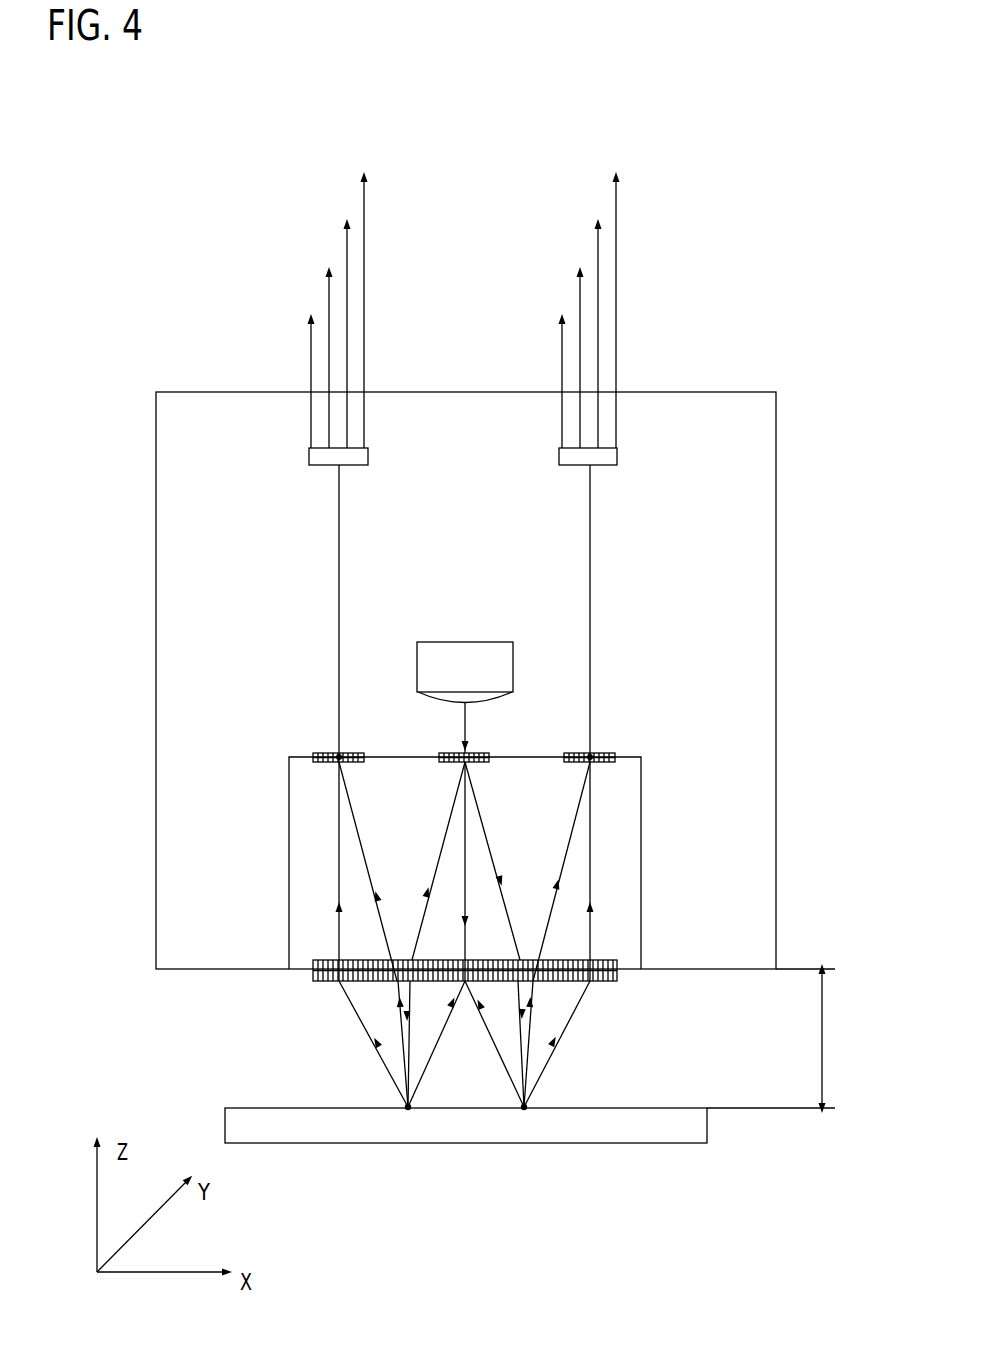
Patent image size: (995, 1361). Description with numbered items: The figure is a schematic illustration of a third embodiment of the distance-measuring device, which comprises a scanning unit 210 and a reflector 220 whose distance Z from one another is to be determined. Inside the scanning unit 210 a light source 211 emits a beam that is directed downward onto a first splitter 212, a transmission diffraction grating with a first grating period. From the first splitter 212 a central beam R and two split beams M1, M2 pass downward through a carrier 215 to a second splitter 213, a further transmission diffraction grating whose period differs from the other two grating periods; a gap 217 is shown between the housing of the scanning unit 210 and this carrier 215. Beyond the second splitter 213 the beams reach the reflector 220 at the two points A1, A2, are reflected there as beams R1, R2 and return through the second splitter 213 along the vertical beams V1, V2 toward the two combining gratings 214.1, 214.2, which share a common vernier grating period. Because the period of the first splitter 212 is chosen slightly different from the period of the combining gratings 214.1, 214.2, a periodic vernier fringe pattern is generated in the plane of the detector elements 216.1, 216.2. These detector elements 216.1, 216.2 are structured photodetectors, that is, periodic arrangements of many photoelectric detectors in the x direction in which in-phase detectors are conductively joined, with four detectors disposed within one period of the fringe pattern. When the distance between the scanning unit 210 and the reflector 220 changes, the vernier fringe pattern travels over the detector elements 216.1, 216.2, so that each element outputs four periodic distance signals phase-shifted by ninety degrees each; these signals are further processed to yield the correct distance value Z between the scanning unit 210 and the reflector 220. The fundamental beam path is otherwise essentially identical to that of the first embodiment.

The scanning unit 210 is at (156, 815).
The light source 211 is at (478, 660).
The first splitter 212 is at (478, 752).
The second splitter 213 is at (595, 968).
The combining grating 214.1 is at (318, 752).
The combining grating 214.2 is at (598, 752).
The transparent carrier block 215 is at (625, 903).
The detector element 216.1 is at (353, 455).
The detector element 216.2 is at (600, 455).
The gap between housing and carrier 217 is at (282, 898).
The reflector 220 is at (688, 1126).
The first vertical beam V1 is at (337, 755).
The second vertical beam V2 is at (592, 755).
The first measuring beam M1 is at (440, 828).
The second measuring beam M2 is at (488, 825).
The reference beam R is at (468, 885).
The first scale impingement point A1 is at (406, 1110).
The second scale impingement point A2 is at (526, 1110).
The first reflected beam R1 is at (428, 1068).
The second reflected beam R2 is at (510, 1080).
The distance value Z is at (812, 1038).